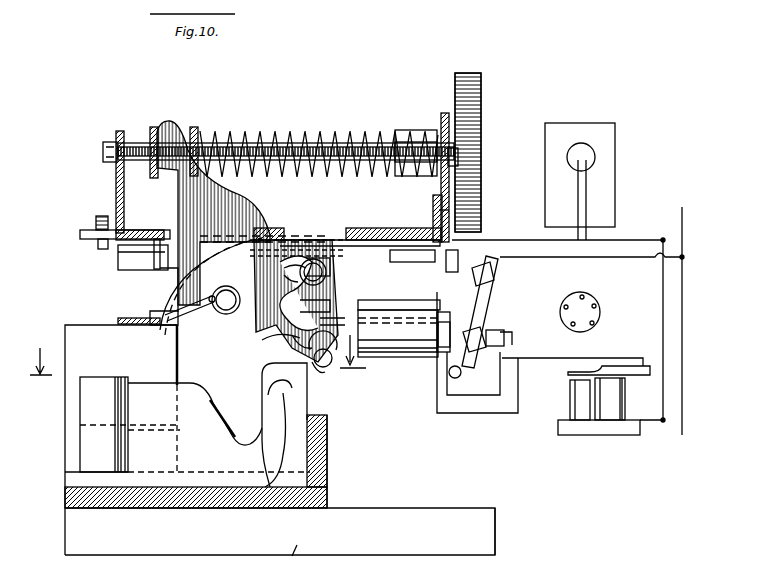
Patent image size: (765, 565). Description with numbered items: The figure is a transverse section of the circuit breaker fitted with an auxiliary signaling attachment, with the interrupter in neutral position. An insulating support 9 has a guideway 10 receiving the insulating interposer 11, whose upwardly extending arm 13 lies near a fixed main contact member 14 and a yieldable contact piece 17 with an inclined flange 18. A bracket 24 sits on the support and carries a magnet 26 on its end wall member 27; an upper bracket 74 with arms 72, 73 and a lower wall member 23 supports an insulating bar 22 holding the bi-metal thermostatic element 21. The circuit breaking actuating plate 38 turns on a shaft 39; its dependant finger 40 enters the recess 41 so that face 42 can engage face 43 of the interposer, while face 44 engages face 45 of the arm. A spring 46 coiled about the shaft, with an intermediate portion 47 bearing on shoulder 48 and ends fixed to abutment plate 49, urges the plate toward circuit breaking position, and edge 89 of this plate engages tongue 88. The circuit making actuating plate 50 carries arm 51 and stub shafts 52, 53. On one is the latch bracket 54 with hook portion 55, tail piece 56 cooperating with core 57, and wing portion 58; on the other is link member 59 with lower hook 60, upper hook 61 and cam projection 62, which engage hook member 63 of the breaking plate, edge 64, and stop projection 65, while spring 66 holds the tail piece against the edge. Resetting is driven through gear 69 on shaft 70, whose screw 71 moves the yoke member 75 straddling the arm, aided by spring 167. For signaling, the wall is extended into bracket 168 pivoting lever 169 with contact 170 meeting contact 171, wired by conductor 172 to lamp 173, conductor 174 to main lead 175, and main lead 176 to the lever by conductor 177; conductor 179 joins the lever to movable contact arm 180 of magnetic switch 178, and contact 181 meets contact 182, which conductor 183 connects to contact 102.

The support 9 is at (326, 452).
The guideway 10 is at (300, 478).
The interposer 11 is at (194, 355).
The upwardly extending arm 13 is at (275, 440).
The main contact member 14 is at (92, 445).
The yieldable contact piece 17 is at (120, 377).
The inclined flange 18 is at (170, 430).
The thermostatic element 21 is at (392, 228).
The insulating bar 22 is at (80, 236).
The lower wall member 23 is at (120, 228).
The bracket 24 is at (118, 260).
The magnet 26 is at (410, 358).
The end wall member 27 is at (440, 291).
The main circuit breaking actuating plate 38 is at (211, 286).
The shaft 39 is at (230, 288).
The dependant finger 40 is at (255, 402).
The recess 41 is at (236, 410).
The face 42 is at (225, 392).
The face 43 is at (208, 392).
The face 44 is at (270, 374).
The face 45 is at (320, 412).
The spring 46 is at (170, 272).
The intermediate portion 47 is at (150, 318).
The shoulder 48 is at (160, 308).
The abutment plate 49 is at (152, 256).
The main circuit making actuating plate 50 is at (215, 195).
The arm 51 is at (170, 122).
The stub shaft 52 is at (322, 272).
The stub shaft 53 is at (328, 370).
The latch bracket 54 is at (358, 228).
The hook portion 55 is at (325, 300).
The tail piece 56 is at (342, 322).
The core 57 is at (456, 322).
The wing portion 58 is at (310, 232).
The link member 59 is at (312, 390).
The lower hook member 60 is at (285, 387).
The upper hook member 61 is at (340, 235).
The cam projection 62 is at (293, 301).
The hook member 63 is at (306, 348).
The edge 64 is at (338, 376).
The projection 65 is at (288, 333).
The spring 66 is at (318, 288).
The gear 69 is at (478, 97).
The shaft 70 is at (455, 150).
The screw 71 is at (278, 127).
The arm 72 is at (118, 132).
The arm 73 is at (443, 114).
The bracket 74 is at (116, 180).
The yoke member 75 is at (152, 128).
The tongue 88 is at (280, 228).
The edge 89 is at (262, 225).
The contact 102 is at (574, 325).
The spring 167 is at (333, 128).
The bracket 168 is at (483, 404).
The lever 169 is at (490, 296).
The contact 170 is at (478, 280).
The contact 171 is at (458, 258).
The conductor 172 is at (530, 226).
The lamp 173 is at (596, 158).
The conductor 174 is at (620, 240).
The main lead 175 is at (663, 290).
The main lead 176 is at (682, 336).
The conductor 177 is at (588, 254).
The magnetic switch 178 is at (616, 420).
The conductor 179 is at (536, 362).
The movable contact arm 180 is at (638, 370).
The contact 181 is at (488, 330).
The contact 182 is at (495, 330).
The conductor 183 is at (533, 352).